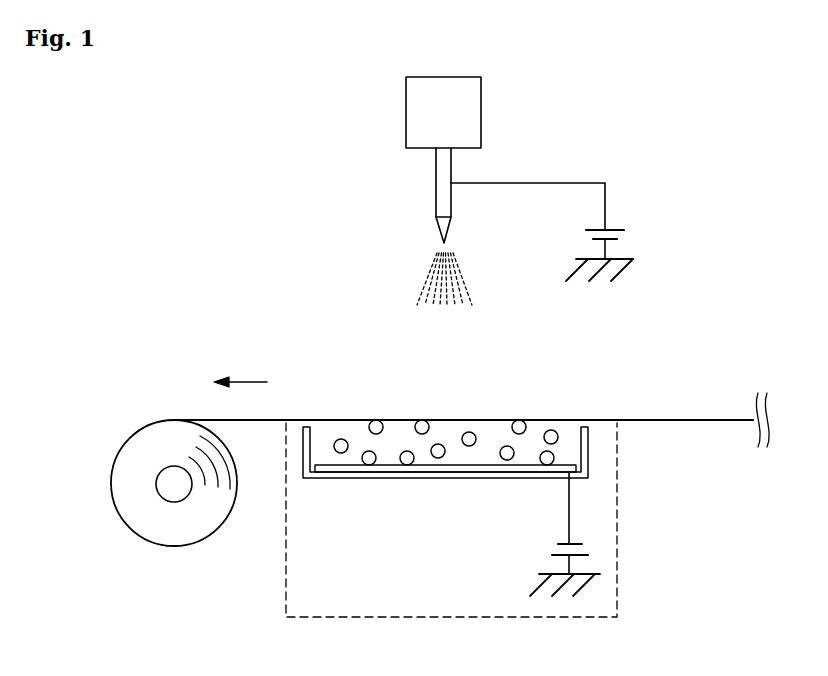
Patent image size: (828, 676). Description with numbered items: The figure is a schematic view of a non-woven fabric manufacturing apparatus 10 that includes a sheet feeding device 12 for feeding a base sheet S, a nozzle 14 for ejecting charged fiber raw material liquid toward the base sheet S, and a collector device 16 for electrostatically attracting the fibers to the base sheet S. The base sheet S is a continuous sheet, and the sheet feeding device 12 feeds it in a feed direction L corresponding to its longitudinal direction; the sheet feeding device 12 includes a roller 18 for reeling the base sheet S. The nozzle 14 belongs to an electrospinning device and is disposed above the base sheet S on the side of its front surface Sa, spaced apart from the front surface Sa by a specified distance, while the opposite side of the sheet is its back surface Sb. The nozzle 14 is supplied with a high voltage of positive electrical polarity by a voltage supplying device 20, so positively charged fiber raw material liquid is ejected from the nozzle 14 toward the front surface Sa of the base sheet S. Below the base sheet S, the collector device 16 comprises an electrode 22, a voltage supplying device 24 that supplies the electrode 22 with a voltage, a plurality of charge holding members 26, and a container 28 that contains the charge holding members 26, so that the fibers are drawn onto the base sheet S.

The non-woven fabric manufacturing apparatus 10 is at (666, 126).
The sheet feeding device 12 is at (120, 522).
The nozzle 14 is at (436, 196).
The collector device 16 is at (618, 537).
The roller 18 is at (176, 490).
The voltage supplying device 20 is at (624, 237).
The electrode 22 is at (390, 472).
The voltage supplying device 24 is at (556, 548).
The charge holding member 26 is at (420, 421).
The container 28 is at (330, 480).
The feed direction L is at (249, 380).
The base sheet S is at (656, 414).
The front surface Sa is at (727, 420).
The back surface Sb is at (698, 421).